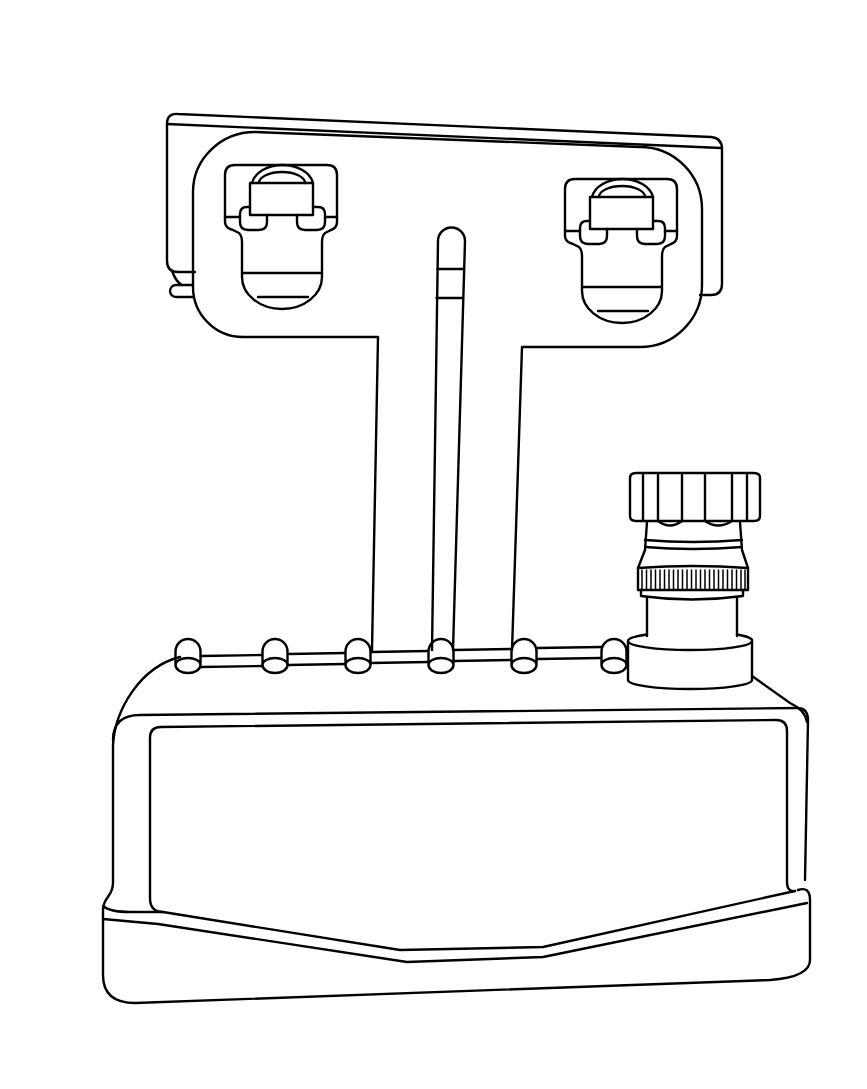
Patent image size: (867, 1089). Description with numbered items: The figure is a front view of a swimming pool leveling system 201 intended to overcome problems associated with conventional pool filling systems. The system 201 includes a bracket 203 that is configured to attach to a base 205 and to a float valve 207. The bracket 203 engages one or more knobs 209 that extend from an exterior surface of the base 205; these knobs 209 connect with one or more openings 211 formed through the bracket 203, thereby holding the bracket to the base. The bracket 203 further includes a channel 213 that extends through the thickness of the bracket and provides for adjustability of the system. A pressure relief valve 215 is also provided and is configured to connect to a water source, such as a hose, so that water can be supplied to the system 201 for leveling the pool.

The swimming pool leveling system 201 is at (707, 64).
The bracket 203 is at (375, 489).
The base 205 is at (167, 189).
The float valve 207 is at (112, 807).
The knob 209 is at (278, 162).
The opening 211 is at (270, 270).
The channel 213 is at (426, 584).
The pressure relief valve 215 is at (696, 471).